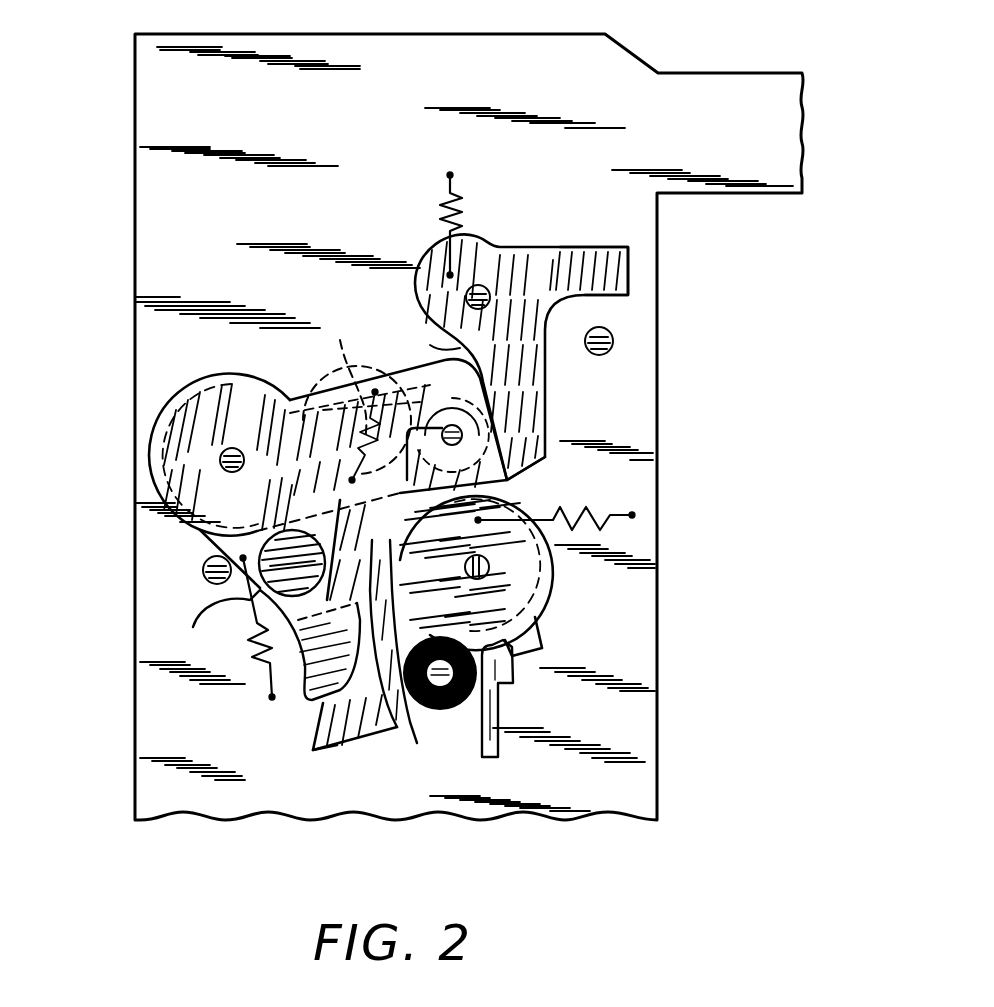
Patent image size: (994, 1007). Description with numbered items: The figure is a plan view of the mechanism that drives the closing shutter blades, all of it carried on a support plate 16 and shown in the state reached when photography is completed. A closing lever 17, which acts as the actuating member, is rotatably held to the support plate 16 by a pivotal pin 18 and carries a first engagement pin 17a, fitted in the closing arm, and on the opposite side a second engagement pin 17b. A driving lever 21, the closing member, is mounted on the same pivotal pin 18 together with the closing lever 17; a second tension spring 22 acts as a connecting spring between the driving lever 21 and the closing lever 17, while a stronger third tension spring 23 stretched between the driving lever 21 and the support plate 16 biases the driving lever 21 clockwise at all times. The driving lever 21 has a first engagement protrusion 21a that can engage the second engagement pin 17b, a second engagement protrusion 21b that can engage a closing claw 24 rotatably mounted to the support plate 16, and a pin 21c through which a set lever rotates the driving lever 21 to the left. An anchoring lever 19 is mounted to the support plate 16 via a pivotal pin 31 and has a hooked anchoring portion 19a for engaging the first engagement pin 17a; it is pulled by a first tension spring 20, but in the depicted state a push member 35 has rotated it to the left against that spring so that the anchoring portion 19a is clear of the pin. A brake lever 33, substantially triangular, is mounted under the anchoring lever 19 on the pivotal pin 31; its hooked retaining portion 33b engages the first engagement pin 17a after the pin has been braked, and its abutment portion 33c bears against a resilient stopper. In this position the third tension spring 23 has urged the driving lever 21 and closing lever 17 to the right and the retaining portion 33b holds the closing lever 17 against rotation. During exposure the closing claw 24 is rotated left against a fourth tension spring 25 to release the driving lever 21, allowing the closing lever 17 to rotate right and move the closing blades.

The support plate 16 is at (710, 87).
The closing lever 17 is at (172, 428).
The first engagement pin 17a is at (508, 484).
The second engagement pin 17b is at (407, 432).
The pivotal pin 18 is at (232, 472).
The anchoring lever 19 is at (535, 622).
The anchoring portion 19a is at (335, 372).
The first tension spring 20 is at (622, 523).
The driving lever 21 is at (213, 543).
The first engagement protrusion 21a is at (430, 345).
The second engagement protrusion 21b is at (303, 690).
The pin 21c is at (211, 625).
The second tension spring 22 is at (355, 434).
The third tension spring 23 is at (247, 660).
The closing claw 24 is at (628, 270).
The fourth tension spring 25 is at (452, 193).
The pivotal pin 31 is at (490, 570).
The brake lever 33 is at (397, 740).
The hooked retaining portion 33b is at (504, 396).
The abutment portion 33c is at (337, 745).
The push member 35 is at (495, 712).